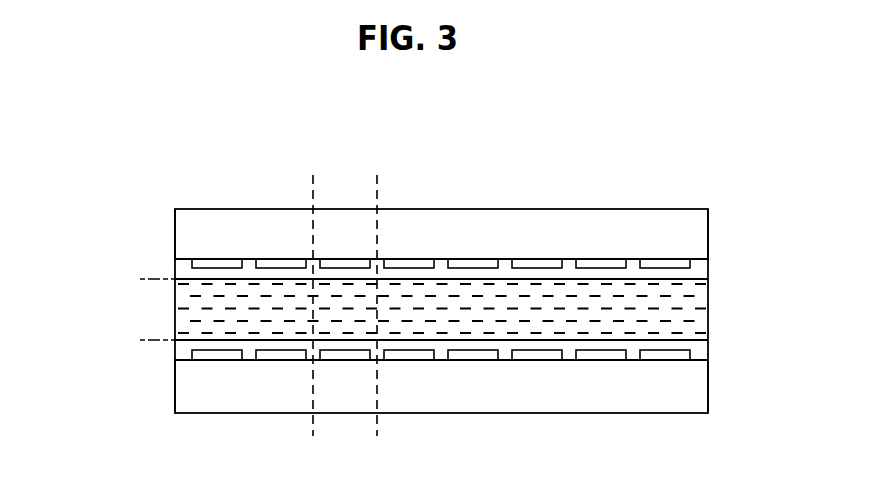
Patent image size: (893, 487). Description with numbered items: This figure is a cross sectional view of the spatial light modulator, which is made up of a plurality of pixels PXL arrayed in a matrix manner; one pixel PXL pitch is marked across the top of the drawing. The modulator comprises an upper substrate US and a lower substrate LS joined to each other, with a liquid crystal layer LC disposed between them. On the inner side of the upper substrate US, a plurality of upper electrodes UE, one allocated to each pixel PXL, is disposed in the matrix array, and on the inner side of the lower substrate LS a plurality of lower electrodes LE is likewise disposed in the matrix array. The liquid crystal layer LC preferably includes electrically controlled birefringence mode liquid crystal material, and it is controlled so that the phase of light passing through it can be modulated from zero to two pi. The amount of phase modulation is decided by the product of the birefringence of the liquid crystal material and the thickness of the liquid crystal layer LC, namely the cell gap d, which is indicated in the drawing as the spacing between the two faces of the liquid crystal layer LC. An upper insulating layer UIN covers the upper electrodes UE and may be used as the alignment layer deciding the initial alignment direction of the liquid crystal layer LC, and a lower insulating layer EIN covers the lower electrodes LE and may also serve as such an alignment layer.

The upper substrate US is at (697, 233).
The upper electrodes UE is at (688, 267).
The liquid crystal layer LC is at (697, 317).
The lower electrodes LE is at (687, 358).
The lower substrate LS is at (697, 392).
The upper insulating layer UIN is at (633, 268).
The lower insulating layer EIN is at (633, 358).
The pixels PXL is at (372, 183).
The cell gap d is at (153, 331).